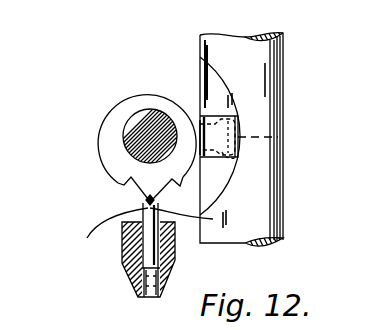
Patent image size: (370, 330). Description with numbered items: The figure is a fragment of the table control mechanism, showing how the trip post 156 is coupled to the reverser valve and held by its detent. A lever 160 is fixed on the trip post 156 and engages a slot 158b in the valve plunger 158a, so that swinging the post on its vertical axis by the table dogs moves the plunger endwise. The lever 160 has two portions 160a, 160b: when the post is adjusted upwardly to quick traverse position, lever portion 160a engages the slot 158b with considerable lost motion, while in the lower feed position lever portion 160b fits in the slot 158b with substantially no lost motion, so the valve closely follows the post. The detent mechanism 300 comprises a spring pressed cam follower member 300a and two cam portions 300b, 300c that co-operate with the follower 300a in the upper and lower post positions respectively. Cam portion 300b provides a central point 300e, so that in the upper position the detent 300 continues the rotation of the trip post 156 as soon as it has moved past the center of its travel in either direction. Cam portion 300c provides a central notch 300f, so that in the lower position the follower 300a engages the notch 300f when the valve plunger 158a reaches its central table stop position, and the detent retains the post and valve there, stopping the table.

The trip post 156 is at (135, 130).
The valve plunger 158a is at (270, 129).
The slot 158b is at (208, 118).
The lever 160 is at (214, 137).
The lever portion 160a is at (276, 137).
The lever portion 160b is at (236, 159).
The detent mechanism 300 is at (123, 206).
The cam follower member 300a is at (140, 253).
The cam portion 300b is at (147, 199).
The cam portion 300c is at (204, 218).
The central point 300e is at (112, 211).
The central notch 300f is at (143, 200).